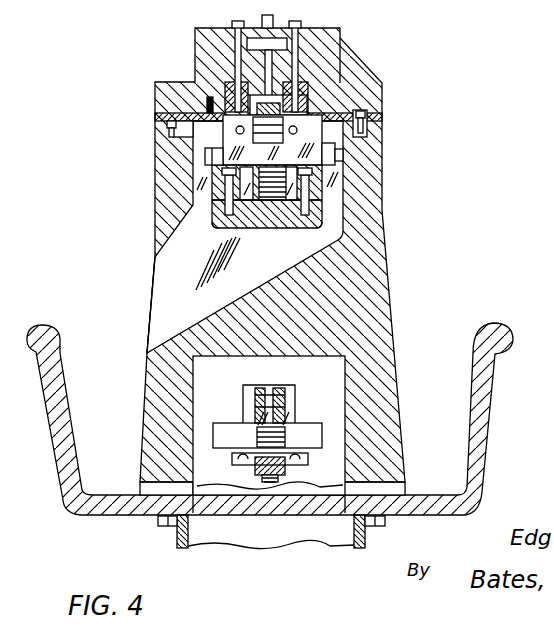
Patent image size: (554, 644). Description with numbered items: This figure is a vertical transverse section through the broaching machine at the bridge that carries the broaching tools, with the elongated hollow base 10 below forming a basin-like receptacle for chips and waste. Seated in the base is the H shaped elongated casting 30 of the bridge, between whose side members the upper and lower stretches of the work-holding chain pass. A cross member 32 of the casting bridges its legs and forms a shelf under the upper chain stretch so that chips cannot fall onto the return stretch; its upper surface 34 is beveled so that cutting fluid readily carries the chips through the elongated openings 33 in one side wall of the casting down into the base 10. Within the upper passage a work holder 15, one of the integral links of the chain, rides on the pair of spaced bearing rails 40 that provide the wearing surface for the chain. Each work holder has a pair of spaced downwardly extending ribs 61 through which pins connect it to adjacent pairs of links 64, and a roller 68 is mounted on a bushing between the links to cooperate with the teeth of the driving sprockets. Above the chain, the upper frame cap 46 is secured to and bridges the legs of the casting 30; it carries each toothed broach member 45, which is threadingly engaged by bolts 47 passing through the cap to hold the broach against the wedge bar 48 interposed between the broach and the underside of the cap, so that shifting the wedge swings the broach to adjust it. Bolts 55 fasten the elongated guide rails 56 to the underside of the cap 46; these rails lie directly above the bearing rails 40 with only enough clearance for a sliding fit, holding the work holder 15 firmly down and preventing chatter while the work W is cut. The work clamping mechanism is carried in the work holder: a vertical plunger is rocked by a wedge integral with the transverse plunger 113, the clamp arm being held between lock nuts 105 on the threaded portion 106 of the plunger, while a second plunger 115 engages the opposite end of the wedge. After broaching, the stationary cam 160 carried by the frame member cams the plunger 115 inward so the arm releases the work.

The hollow base 10 is at (484, 399).
The work holder 15 is at (205, 150).
The H shaped elongated casting 30 is at (388, 308).
The cross member 32 is at (294, 358).
The elongated openings 33 is at (162, 292).
The upper surface of the cross member 34 is at (281, 273).
The bearing rails 40 is at (214, 226).
The toothed broach member 45 is at (225, 103).
The upper frame cap 46 is at (327, 50).
The bolts 47 is at (303, 27).
The wedge bar 48 is at (233, 98).
The bolts 55 is at (330, 108).
The guide rails 56 is at (365, 136).
The downwardly extending ribs 61 is at (231, 228).
The links 64 is at (283, 405).
The roller 68 is at (280, 373).
The lock nuts 105 is at (262, 476).
The threaded portion 106 is at (272, 477).
The plunger 113 is at (210, 160).
The plunger 115 is at (353, 154).
The stationary cam 160 is at (345, 166).
The work piece W is at (207, 103).